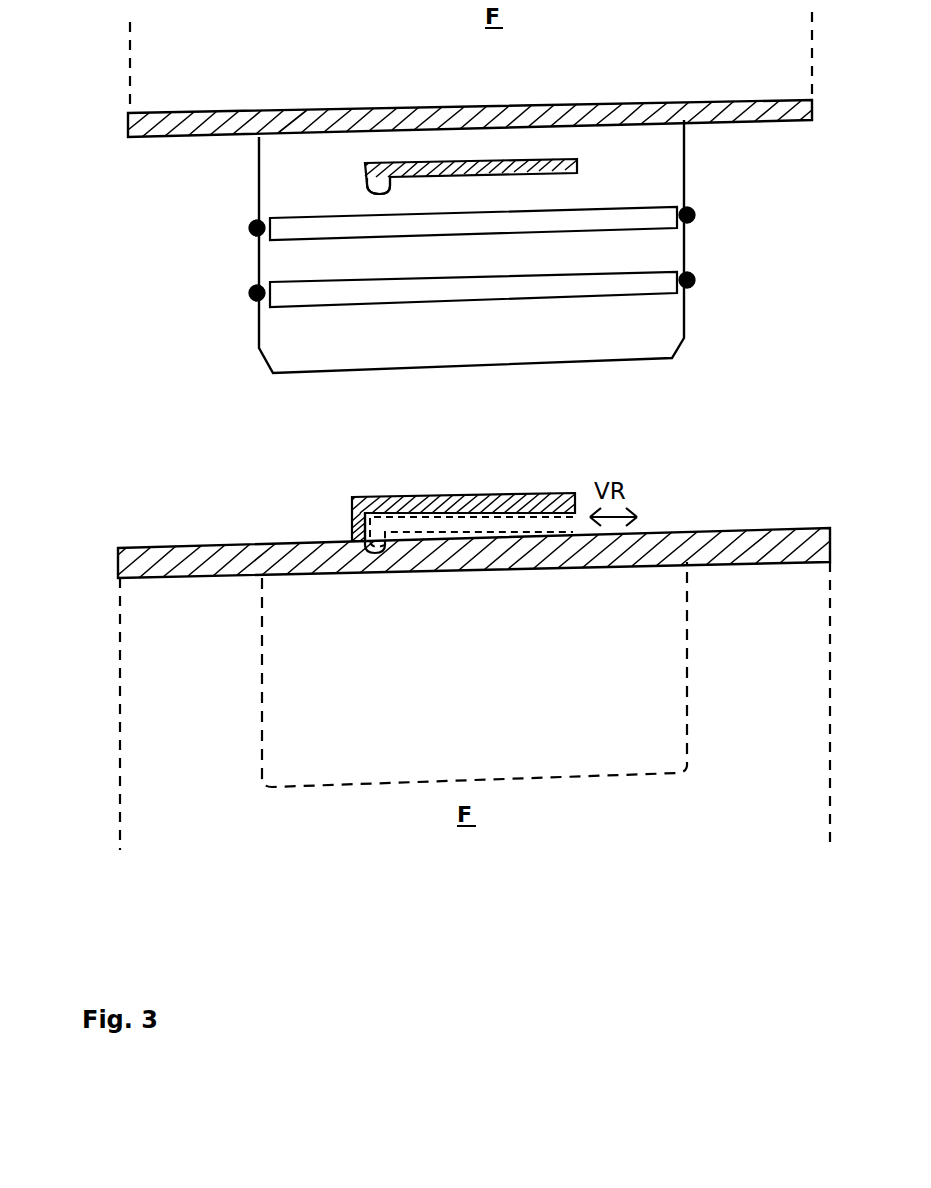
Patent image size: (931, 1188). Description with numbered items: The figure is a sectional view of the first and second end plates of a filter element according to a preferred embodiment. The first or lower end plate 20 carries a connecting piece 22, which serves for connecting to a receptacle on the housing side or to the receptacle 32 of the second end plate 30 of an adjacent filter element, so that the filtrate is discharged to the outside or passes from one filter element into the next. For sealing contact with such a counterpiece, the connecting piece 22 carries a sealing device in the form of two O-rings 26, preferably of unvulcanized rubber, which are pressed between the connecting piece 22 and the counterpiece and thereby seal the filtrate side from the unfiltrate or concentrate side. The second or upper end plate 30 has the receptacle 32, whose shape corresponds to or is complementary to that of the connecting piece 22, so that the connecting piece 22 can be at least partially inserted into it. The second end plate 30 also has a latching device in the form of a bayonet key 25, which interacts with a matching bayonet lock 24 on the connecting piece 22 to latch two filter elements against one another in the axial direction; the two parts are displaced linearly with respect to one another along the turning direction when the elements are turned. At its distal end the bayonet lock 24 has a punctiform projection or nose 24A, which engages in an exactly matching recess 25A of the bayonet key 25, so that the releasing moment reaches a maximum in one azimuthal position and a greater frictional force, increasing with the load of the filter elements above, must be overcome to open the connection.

The first end plate 20 is at (185, 137).
The connecting piece 22 is at (450, 373).
The bayonet lock 24 is at (545, 158).
The projection 24A is at (373, 198).
The bayonet key 25 is at (430, 497).
The recess 25A is at (385, 553).
The O-rings 26 is at (696, 279).
The second end plate 30 is at (195, 545).
The receptacle 32 is at (482, 666).